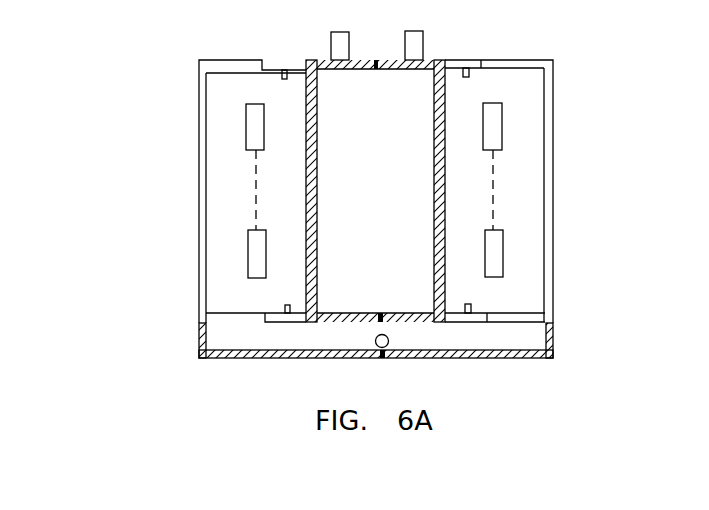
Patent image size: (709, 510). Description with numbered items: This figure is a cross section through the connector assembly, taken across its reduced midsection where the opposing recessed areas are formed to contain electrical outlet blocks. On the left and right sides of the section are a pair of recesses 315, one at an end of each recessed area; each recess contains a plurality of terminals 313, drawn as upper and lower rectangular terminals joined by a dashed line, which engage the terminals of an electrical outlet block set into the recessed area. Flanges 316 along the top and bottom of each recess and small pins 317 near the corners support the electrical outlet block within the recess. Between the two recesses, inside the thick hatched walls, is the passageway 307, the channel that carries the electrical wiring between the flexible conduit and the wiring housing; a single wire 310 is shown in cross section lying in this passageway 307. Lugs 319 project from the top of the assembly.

The passageway 307 is at (532, 340).
The wire 310 is at (376, 347).
The terminals 313 is at (246, 128).
The recesses 315 is at (223, 189).
The flanges 316 is at (278, 63).
The pins 317 is at (282, 80).
The lugs 319 is at (331, 39).